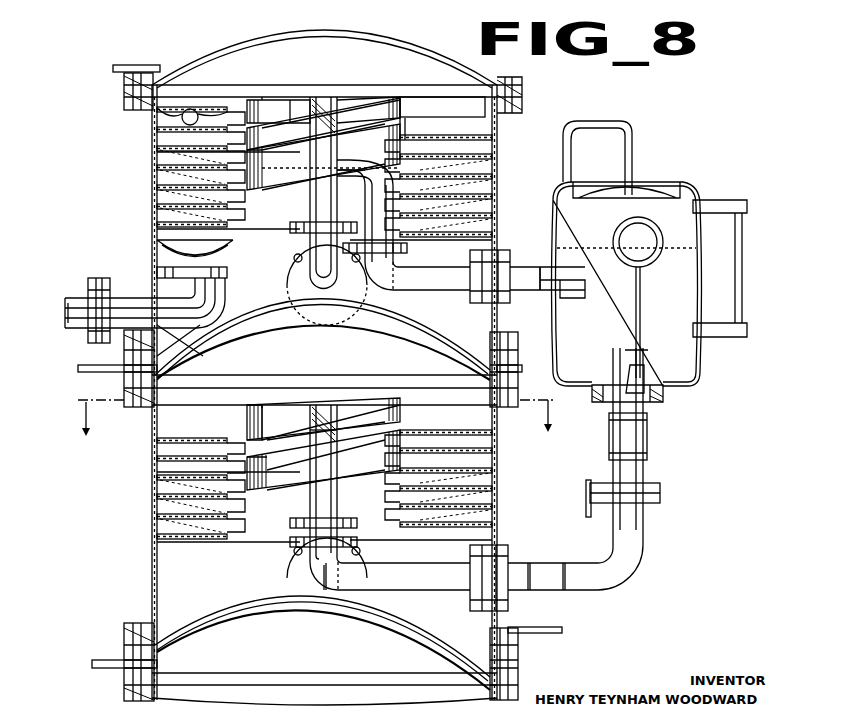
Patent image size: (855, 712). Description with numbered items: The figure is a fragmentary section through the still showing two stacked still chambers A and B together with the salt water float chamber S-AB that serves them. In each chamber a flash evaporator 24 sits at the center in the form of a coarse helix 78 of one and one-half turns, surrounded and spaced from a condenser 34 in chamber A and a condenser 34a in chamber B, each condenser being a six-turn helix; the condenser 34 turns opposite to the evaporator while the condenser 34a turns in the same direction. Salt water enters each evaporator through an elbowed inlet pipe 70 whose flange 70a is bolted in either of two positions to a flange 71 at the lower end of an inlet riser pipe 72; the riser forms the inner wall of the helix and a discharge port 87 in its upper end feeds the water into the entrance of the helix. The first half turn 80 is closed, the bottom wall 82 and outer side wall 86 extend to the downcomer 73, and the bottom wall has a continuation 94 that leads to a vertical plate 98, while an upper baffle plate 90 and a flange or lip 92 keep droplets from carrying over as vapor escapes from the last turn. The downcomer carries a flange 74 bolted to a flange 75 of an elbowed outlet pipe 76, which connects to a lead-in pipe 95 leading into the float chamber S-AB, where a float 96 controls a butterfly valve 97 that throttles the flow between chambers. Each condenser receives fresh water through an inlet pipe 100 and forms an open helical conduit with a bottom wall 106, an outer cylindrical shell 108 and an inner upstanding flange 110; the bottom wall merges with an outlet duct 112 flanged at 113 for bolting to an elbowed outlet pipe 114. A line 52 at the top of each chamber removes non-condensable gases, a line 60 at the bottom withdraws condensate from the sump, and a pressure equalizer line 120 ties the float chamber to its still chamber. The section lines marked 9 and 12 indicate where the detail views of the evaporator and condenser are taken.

The section line 9 is at (331, 157).
The section line 12- 12 is at (317, 408).
The flash evaporator 24 is at (338, 96).
The condenser 34 is at (180, 156).
The condenser 34a is at (165, 473).
The line 52 is at (118, 64).
The line 60 is at (556, 303).
The elbowed inlet pipe 70 is at (322, 289).
The flange 70a is at (308, 240).
The flange 71 is at (300, 234).
The inlet riser pipe 72 is at (296, 222).
The downcomer 73 is at (356, 182).
The flange 74 is at (408, 248).
The flange 75 is at (360, 288).
The elbowed outlet pipe 76 is at (420, 280).
The coarse helix 78 is at (266, 95).
The first half turn 80 is at (245, 417).
The bottom wall 82 is at (297, 440).
The outer side wall 86 is at (412, 136).
The discharge port 87 is at (297, 100).
The upper baffle plate 90 is at (385, 432).
The flange or lip 92 is at (402, 118).
The continuation 94 is at (368, 100).
The lead-in pipe 95 is at (540, 256).
The float 96 is at (248, 97).
The butterfly valve 97 is at (642, 368).
The vertical plate 98 is at (404, 106).
The inlet pipe 100 is at (182, 118).
The bottom wall 106 is at (200, 213).
The cylindrical shell 108 is at (160, 137).
The upstanding flange 110 is at (185, 180).
The outlet duct 112 is at (165, 243).
The flange 113 is at (160, 268).
The elbowed outlet pipe 114 is at (203, 350).
The pressure equalizer line 120 is at (576, 120).
The chamber A is at (140, 236).
The chamber B is at (138, 561).
The salt water float chamber S-AB is at (680, 184).